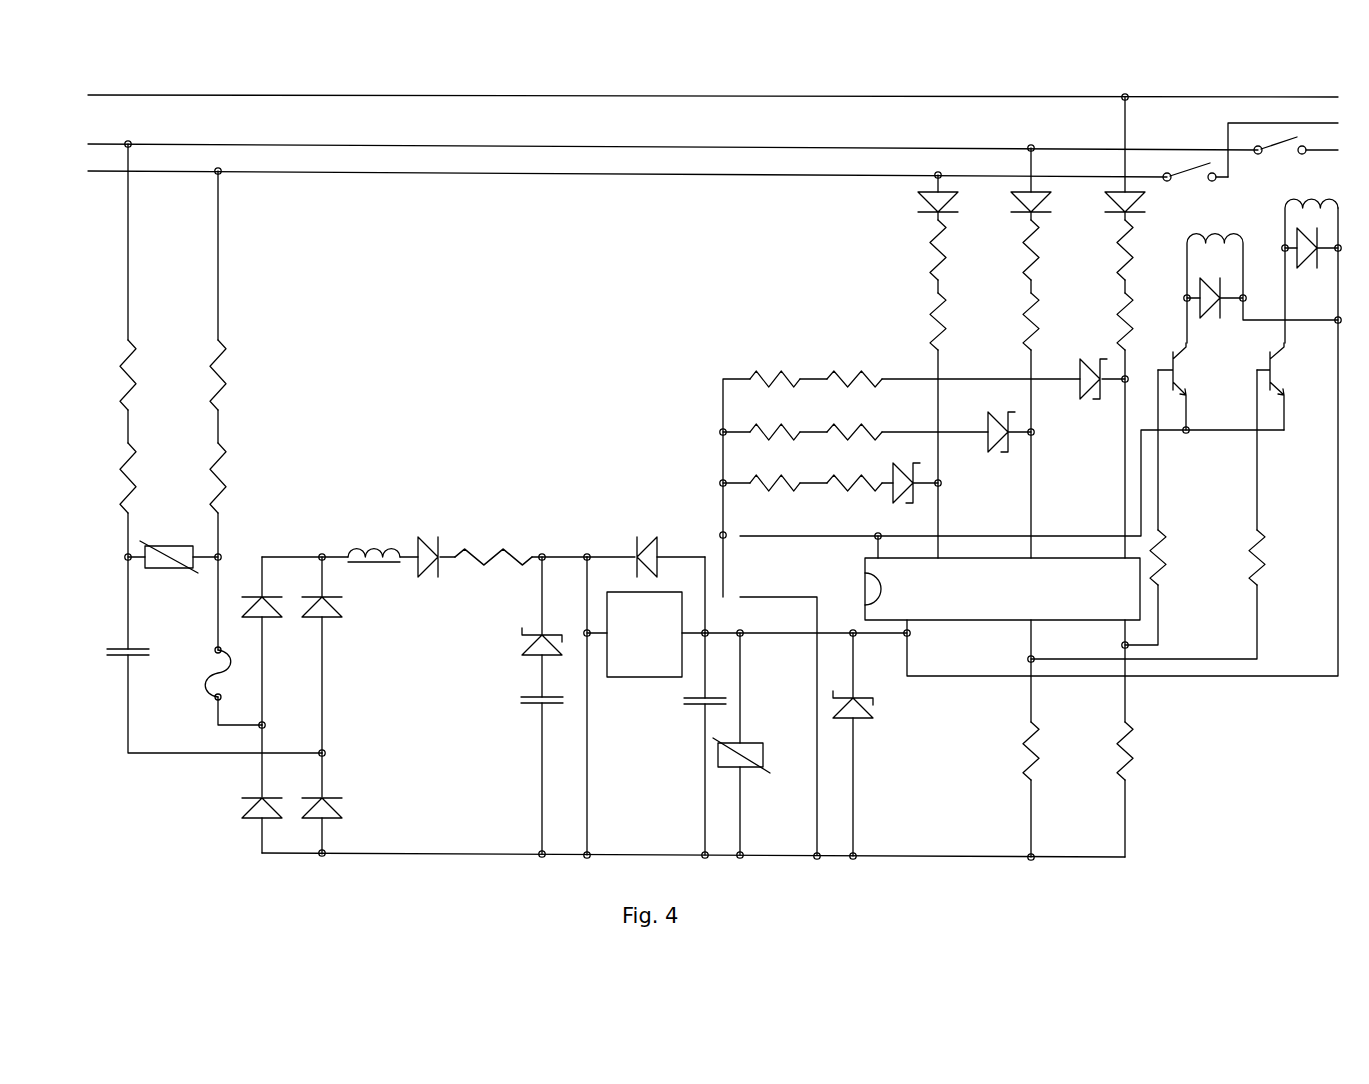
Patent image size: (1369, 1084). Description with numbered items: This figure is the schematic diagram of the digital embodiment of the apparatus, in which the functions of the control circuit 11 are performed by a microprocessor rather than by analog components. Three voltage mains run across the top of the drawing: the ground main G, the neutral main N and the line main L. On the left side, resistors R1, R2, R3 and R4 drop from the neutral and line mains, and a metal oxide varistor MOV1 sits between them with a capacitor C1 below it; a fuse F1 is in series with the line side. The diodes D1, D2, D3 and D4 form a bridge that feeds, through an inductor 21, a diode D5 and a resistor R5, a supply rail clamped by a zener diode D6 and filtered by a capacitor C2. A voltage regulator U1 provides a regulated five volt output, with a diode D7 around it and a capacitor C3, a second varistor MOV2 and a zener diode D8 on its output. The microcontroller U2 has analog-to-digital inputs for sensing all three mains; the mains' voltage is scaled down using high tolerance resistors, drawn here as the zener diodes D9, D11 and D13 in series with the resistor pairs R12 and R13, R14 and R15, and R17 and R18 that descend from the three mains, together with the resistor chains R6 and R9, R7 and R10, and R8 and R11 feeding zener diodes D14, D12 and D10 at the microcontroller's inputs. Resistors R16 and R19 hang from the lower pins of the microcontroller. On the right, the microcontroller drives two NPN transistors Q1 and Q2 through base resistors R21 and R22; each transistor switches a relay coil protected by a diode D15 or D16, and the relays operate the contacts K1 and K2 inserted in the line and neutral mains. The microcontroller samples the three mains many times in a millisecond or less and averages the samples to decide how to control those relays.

The ground main G is at (713, 98).
The neutral main N is at (713, 150).
The line main L is at (711, 150).
The resistor R1 is at (112, 375).
The resistor R2 is at (112, 478).
The resistor R3 is at (200, 375).
The resistor R4 is at (200, 478).
The metal oxide varistor MOV1 is at (173, 576).
The capacitor C1 is at (118, 639).
The fuse F1 is at (201, 673).
The diode D1 is at (255, 641).
The diode D2 is at (255, 789).
The diode D3 is at (316, 655).
The diode D4 is at (316, 803).
The inductor 21 is at (374, 541).
The diode D5 is at (430, 545).
The resistor R5 is at (493, 543).
The zener diode D6 is at (524, 627).
The capacitor C2 is at (558, 761).
The voltage regulator U1 is at (646, 634).
The diode D7 is at (646, 544).
The capacitor C3 is at (695, 706).
The metal oxide varistor MOV2 is at (761, 744).
The zener diode D8 is at (862, 744).
The resistor R6 is at (775, 369).
The resistor R7 is at (775, 420).
The resistor R8 is at (775, 472).
The resistor R9 is at (854, 369).
The resistor R10 is at (854, 420).
The resistor R11 is at (854, 472).
The zener diode D10 is at (903, 497).
The zener diode D12 is at (998, 447).
The zener diode D14 is at (1084, 395).
The zener diode D9 is at (921, 203).
The zener diode D11 is at (1009, 203).
The zener diode D13 is at (1101, 203).
The resistor R12 is at (915, 250).
The resistor R13 is at (915, 321).
The resistor R14 is at (1008, 250).
The resistor R15 is at (1008, 321).
The resistor R17 is at (1102, 250).
The resistor R18 is at (1102, 321).
The microcontroller U2 is at (1002, 589).
The relay K1 is at (1195, 183).
The relay K2 is at (1296, 159).
The diode D15 is at (1262, 291).
The diode D16 is at (1311, 250).
The NPN transistor Q1 is at (1182, 386).
The NPN transistor Q2 is at (1282, 386).
The resistor R21 is at (1168, 507).
The resistor R22 is at (1169, 514).
The resistor R16 is at (1009, 738).
The resistor R19 is at (1101, 738).
The control circuit 11 is at (450, 397).